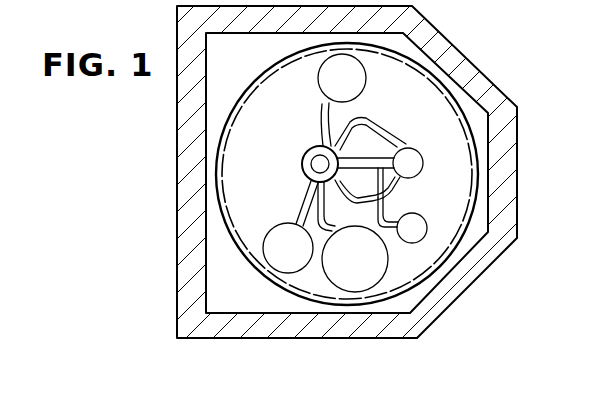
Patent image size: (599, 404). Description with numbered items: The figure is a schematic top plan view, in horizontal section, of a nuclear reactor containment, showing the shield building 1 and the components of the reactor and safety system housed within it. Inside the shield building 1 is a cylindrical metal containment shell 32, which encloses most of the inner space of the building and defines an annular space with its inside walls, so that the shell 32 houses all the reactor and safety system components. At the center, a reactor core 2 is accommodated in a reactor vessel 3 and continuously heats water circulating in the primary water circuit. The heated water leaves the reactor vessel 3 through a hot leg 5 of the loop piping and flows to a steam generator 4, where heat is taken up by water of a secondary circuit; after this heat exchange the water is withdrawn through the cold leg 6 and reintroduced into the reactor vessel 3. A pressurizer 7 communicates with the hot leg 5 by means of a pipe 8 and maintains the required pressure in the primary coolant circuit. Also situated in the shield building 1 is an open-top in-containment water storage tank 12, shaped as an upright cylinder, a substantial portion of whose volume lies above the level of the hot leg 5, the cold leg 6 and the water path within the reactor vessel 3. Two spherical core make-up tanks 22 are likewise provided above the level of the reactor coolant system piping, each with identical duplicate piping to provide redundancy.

The shield building 1 is at (178, 157).
The reactor core 2 is at (314, 167).
The reactor vessel 3 is at (303, 160).
The steam generator 4 is at (412, 166).
The hot leg 5 is at (380, 137).
The cold leg 6 is at (378, 121).
The pressurizer 7 is at (412, 226).
The pipe 8 is at (378, 184).
The in-containment water storage tank 12 is at (366, 270).
The core make-up tanks 22 is at (353, 89).
The cylindrical metal containment shell 32 is at (257, 86).